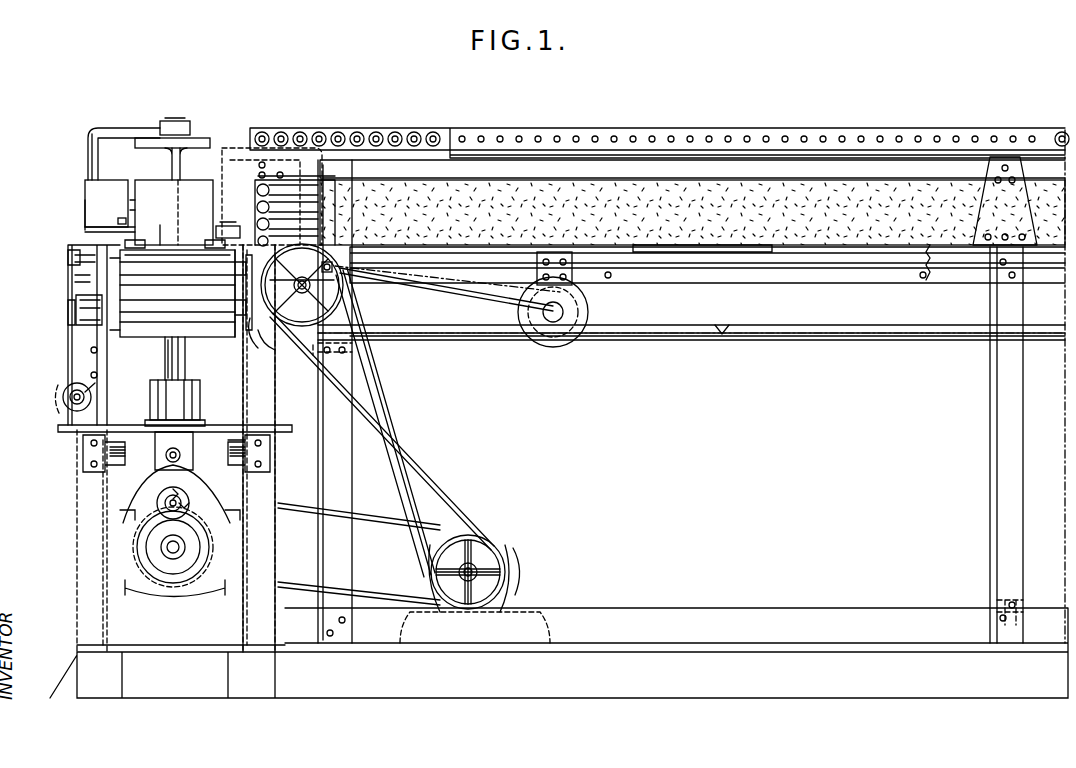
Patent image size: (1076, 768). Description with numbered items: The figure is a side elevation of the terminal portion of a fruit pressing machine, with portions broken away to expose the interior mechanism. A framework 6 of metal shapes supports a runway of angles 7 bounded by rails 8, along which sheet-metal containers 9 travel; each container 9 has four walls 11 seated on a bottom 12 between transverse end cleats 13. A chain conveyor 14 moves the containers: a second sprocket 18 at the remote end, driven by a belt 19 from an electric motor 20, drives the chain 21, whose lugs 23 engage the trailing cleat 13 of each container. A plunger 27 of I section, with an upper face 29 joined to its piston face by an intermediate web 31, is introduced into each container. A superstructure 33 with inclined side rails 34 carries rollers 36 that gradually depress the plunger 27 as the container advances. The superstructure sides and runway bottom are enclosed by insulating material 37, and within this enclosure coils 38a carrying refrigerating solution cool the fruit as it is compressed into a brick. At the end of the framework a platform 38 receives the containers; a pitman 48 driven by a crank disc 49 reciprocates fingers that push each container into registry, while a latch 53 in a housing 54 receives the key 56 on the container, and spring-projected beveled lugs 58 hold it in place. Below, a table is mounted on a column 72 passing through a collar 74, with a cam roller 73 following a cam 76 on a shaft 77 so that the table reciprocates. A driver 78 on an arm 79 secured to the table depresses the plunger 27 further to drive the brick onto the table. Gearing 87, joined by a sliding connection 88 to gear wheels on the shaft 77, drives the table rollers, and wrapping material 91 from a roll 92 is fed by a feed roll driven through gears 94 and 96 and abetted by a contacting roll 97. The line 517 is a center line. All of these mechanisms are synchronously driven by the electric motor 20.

The framework 6 is at (78, 480).
The angles 7 is at (793, 250).
The rails 8 is at (282, 240).
The container 9 is at (100, 232).
The walls 11 is at (169, 225).
The bottom 12 is at (174, 212).
The end cleats 13 is at (142, 245).
The chain conveyor 14 is at (380, 350).
The second sprocket 18 is at (346, 295).
The belt 19 is at (378, 402).
The electric motor 20 is at (485, 535).
The chain 21 is at (748, 245).
The lugs 23 is at (553, 244).
The plunger 27 is at (182, 166).
The upper face 29 is at (220, 150).
The intermediate web 31 is at (172, 165).
The superstructure 33 is at (915, 152).
The side rails 34 is at (385, 130).
The rollers 36 is at (318, 130).
The insulating material 37 is at (425, 198).
The platform 38 is at (153, 250).
The coils 38a is at (290, 186).
The pitman 48 is at (432, 286).
The crank disc 49 is at (553, 310).
The latch 53 is at (90, 195).
The housing 54 is at (88, 205).
The key 56 is at (135, 222).
The beveled lug 58 is at (225, 228).
The column 72 is at (170, 372).
The cam roller 73 is at (214, 410).
The collar 74 is at (185, 372).
The cam 76 is at (200, 502).
The shaft 77 is at (173, 560).
The driver 78 is at (180, 128).
The arm 79 is at (122, 130).
The gearing 87 is at (78, 258).
The sliding connection 88 is at (80, 311).
The wrapping material 91 is at (228, 318).
The roll 92 is at (245, 432).
The gear 94 is at (75, 372).
The gear 96 is at (70, 312).
The contacting roll 97 is at (255, 320).
The center line 517 is at (447, 276).